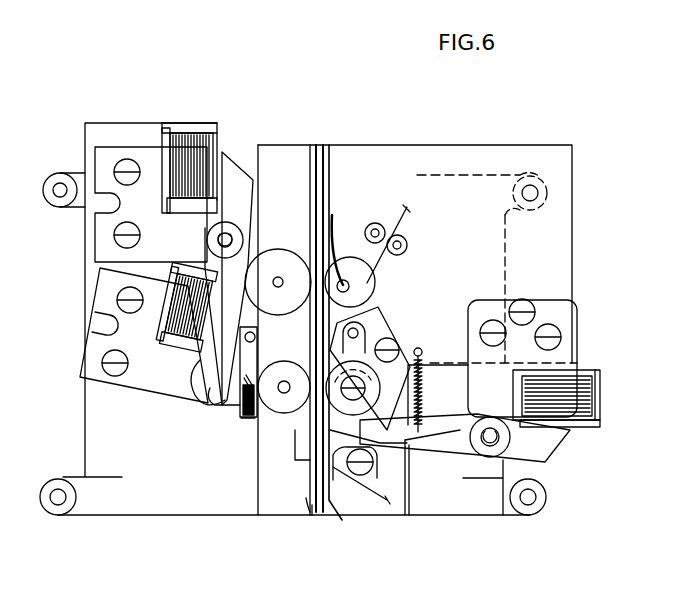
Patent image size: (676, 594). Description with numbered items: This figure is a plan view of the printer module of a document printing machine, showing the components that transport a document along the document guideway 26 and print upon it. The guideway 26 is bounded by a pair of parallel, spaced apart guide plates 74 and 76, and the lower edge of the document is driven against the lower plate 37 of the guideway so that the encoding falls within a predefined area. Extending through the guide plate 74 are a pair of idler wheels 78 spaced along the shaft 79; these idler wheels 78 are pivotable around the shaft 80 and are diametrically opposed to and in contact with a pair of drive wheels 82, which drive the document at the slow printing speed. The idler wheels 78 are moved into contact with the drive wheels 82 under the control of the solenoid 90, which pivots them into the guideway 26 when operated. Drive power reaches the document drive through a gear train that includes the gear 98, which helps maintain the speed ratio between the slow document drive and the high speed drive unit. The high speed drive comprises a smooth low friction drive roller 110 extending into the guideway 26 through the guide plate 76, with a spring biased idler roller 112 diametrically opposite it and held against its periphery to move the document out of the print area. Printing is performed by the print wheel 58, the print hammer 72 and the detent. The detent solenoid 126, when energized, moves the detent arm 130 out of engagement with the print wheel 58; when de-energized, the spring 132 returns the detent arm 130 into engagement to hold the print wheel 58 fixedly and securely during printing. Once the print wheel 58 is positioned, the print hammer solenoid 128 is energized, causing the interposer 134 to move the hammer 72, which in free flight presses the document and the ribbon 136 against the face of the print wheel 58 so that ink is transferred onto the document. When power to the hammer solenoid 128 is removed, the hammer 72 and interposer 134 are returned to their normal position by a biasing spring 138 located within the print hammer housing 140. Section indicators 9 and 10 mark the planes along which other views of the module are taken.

The section line 9- 9 is at (278, 280).
The section line 10- 10 is at (434, 160).
The document guideway 26 is at (322, 510).
The lower plate 37 is at (322, 145).
The print wheel 58 is at (380, 443).
The print hammer 72 is at (240, 420).
The guide plate 74 is at (332, 205).
The guide plate 76 is at (308, 500).
The idler wheels 78 is at (400, 372).
The shaft 79 is at (422, 385).
The shaft 80 is at (358, 333).
The drive wheels 82 is at (280, 415).
The solenoid 90 is at (80, 378).
The gear 98 is at (200, 362).
The drive roller 110 is at (263, 205).
The idler roller 112 is at (367, 288).
The detent solenoid 126 is at (600, 400).
The print hammer solenoid 128 is at (190, 128).
The detent arm 130 is at (548, 455).
The spring 132 is at (430, 410).
The interposer 134 is at (210, 397).
The ribbon 136 is at (405, 213).
The biasing spring 138 is at (253, 420).
The print hammer housing 140 is at (245, 347).